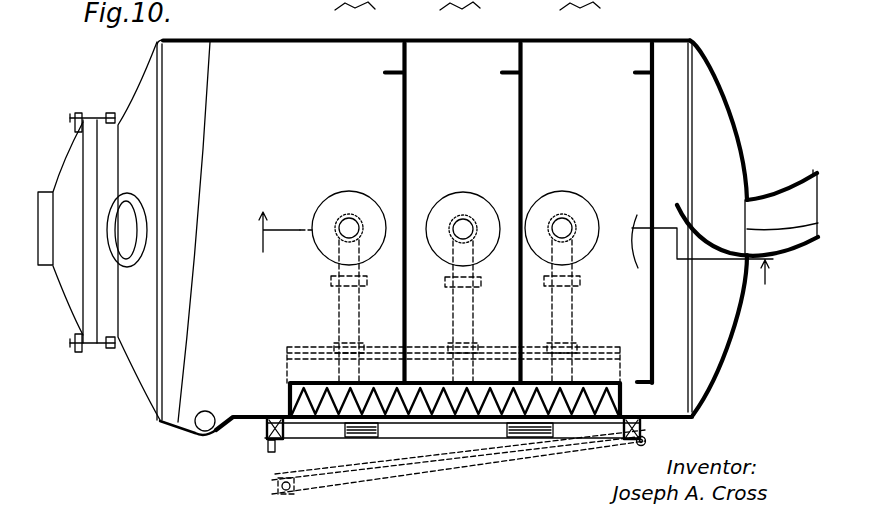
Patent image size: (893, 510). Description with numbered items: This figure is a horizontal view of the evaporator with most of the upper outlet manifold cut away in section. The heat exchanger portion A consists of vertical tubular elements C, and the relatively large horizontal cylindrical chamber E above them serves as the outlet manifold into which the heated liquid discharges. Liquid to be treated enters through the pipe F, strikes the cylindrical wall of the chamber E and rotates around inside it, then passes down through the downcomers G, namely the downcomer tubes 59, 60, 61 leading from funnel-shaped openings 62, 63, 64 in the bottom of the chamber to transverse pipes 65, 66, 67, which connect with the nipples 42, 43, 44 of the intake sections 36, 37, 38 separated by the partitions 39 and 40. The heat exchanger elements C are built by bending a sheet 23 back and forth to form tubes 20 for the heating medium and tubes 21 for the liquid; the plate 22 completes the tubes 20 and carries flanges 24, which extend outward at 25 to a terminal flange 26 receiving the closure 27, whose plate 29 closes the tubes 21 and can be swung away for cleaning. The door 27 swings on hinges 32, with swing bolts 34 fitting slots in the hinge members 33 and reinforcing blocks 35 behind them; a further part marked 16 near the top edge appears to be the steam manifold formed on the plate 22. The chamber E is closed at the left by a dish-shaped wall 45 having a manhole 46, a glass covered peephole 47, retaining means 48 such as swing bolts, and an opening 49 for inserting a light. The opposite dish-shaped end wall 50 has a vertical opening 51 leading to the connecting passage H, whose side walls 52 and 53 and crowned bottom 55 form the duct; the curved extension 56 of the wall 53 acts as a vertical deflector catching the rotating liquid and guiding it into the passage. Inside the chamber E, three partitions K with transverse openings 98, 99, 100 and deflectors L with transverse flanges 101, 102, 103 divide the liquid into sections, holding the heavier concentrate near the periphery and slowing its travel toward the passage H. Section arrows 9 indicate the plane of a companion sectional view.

The heat exchanger portion A is at (192, 45).
The horizontal cylindrical chamber E is at (595, 53).
The pipe F is at (212, 412).
The vertical tubular elements C is at (452, 453).
The outlet passage G is at (335, 8).
The connecting passage H is at (762, 197).
The partitions K is at (408, 162).
The deflectors L is at (407, 73).
The section line 9 is at (515, 257).
The motor 16 is at (467, 8).
The tubes 20 is at (340, 393).
The tubes 21 is at (345, 405).
The plate 22 is at (477, 385).
The bent sheet 23 is at (288, 392).
The flanges 24 is at (290, 403).
The outward extensions 25 is at (272, 424).
The terminal flange 26 is at (268, 439).
The closure 27 is at (493, 434).
The plate 29 is at (538, 422).
The hinges 32 is at (647, 442).
The hinge member 33 is at (351, 437).
The swing bolt 34 is at (268, 452).
The reinforcing blocks 35 is at (443, 428).
The intake section 36 is at (368, 393).
The intake section 37 is at (483, 397).
The intake section 38 is at (578, 393).
The partitions 39 is at (415, 395).
The partition 40 is at (528, 393).
The nipple 42 is at (373, 352).
The nipple 43 is at (447, 363).
The nipple 44 is at (588, 351).
The dish-shaped wall 45 is at (130, 88).
The manhole 46 is at (73, 294).
The glass covered peephole 47 is at (60, 186).
The retaining means 48 is at (85, 113).
The opening 49 is at (126, 212).
The dish-shaped end wall 50 is at (733, 116).
The vertical opening 51 is at (745, 220).
The side wall 52 is at (797, 177).
The side wall 53 is at (793, 252).
The bottom 55 is at (778, 230).
The extension 56 is at (687, 210).
The downcomer tube 59 is at (340, 220).
The downcomer tube 60 is at (457, 218).
The downcomer tube 61 is at (552, 218).
The funnel-shaped opening 62 is at (332, 243).
The funnel-shaped opening 63 is at (445, 243).
The funnel-shaped opening 64 is at (585, 248).
The transverse pipe 65 is at (333, 311).
The transverse pipe 66 is at (453, 319).
The transverse pipe 67 is at (578, 309).
The transverse opening 98 is at (412, 212).
The transverse opening 99 is at (519, 240).
The transverse opening 100 is at (626, 234).
The transverse flange 101 is at (383, 80).
The transverse flange 102 is at (503, 80).
The transverse flange 103 is at (638, 80).